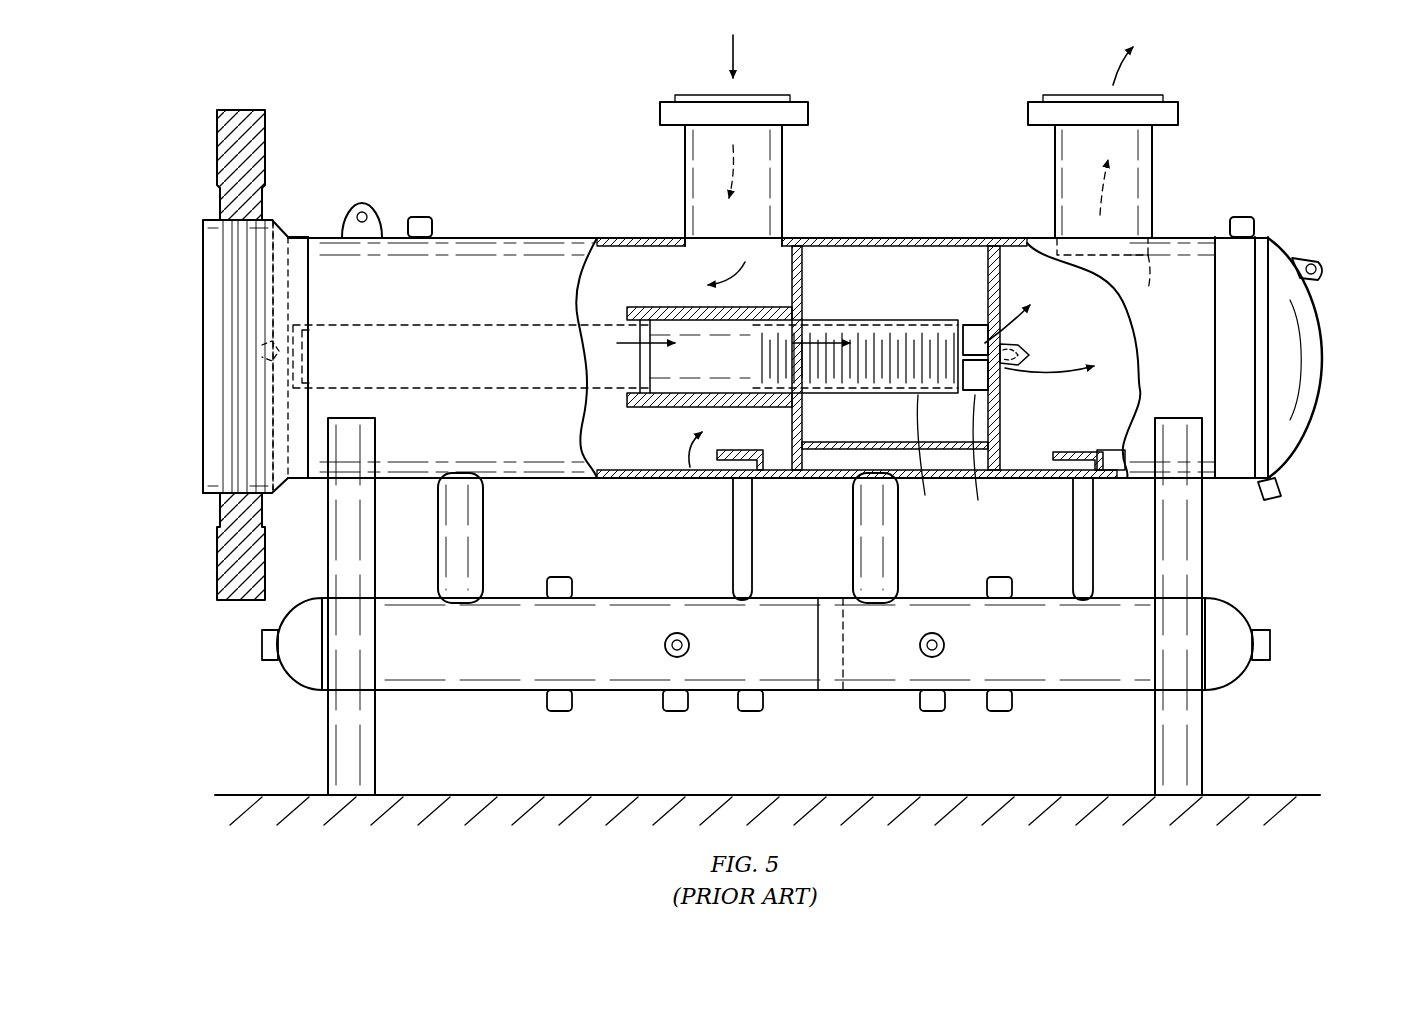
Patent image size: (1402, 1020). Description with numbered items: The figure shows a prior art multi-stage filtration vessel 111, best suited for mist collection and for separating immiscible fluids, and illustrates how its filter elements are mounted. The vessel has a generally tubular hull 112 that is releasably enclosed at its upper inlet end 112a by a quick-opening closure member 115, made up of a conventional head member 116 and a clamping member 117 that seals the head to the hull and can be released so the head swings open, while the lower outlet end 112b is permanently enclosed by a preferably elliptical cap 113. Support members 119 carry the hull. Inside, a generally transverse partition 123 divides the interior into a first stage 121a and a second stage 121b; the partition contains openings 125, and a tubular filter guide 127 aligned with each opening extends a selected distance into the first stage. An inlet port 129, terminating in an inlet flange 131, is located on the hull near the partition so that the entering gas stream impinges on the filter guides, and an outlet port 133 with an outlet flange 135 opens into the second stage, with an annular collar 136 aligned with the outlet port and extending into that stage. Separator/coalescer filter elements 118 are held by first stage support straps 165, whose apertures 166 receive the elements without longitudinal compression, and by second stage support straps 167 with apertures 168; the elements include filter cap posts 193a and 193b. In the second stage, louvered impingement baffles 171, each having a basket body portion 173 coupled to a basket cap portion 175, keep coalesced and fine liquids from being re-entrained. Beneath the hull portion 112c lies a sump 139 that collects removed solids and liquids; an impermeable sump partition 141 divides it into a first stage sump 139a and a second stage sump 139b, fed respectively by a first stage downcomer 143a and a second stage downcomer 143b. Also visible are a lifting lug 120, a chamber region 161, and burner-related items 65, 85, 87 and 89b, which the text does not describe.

The multi-stage vessel 111 is at (1268, 176).
The hull 112 is at (545, 237).
The upper inlet end 112a is at (203, 250).
The lower outlet end 112b is at (1270, 245).
The portion of hull 112c is at (572, 482).
The cap 113 is at (1325, 330).
The closure member 115 is at (290, 228).
The head member 116 is at (203, 410).
The clamping member 117 is at (217, 152).
The separator/coalescer filter elements 118 is at (495, 325).
The support members 119 is at (1205, 535).
The lifting lug 120 is at (362, 203).
The first stage 121a is at (709, 482).
The second stage 121b is at (922, 256).
The partition 123 is at (800, 240).
The openings 125 is at (818, 318).
The tubular filter guide 127 is at (650, 306).
The inlet port 129 is at (878, 238).
The inlet flange 131 is at (660, 113).
The outlet port 133 is at (1153, 185).
The outlet flange 135 is at (1180, 113).
The annular collar 136 is at (1160, 283).
The sump 139 is at (790, 696).
The first stage sump 139a is at (488, 694).
The second stage sump 139b is at (1052, 694).
The sump partition 141 is at (818, 635).
The first stage downcomer 143a is at (485, 542).
The second stage downcomer 143b is at (900, 555).
The combustion chamber 161 is at (1140, 426).
The first stage support straps 165 is at (268, 445).
The apertures 166 is at (266, 344).
The second stage support straps 167 is at (1000, 250).
The apertures 168 is at (1018, 352).
The louvered impingement baffles 171 is at (915, 325).
The basket body portion 173 is at (927, 460).
The basket cap portion 175 is at (978, 465).
The filter cap post 193a is at (268, 358).
The filter cap post 193b is at (1045, 375).
The bolt line 65 is at (290, 292).
The burner inner tube 85 is at (655, 358).
The burner mounting plate 87 is at (640, 360).
The burner outer tube 89b is at (862, 323).